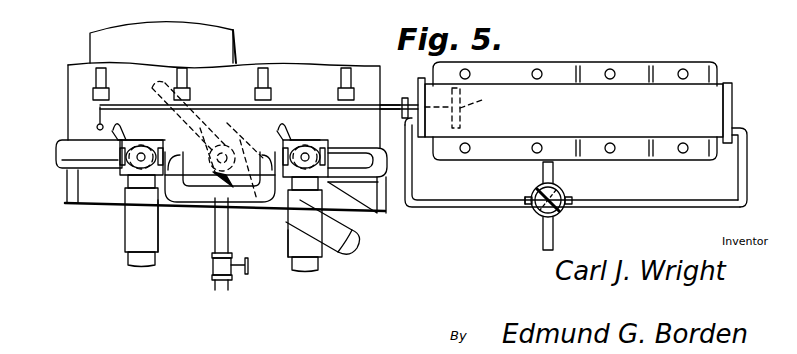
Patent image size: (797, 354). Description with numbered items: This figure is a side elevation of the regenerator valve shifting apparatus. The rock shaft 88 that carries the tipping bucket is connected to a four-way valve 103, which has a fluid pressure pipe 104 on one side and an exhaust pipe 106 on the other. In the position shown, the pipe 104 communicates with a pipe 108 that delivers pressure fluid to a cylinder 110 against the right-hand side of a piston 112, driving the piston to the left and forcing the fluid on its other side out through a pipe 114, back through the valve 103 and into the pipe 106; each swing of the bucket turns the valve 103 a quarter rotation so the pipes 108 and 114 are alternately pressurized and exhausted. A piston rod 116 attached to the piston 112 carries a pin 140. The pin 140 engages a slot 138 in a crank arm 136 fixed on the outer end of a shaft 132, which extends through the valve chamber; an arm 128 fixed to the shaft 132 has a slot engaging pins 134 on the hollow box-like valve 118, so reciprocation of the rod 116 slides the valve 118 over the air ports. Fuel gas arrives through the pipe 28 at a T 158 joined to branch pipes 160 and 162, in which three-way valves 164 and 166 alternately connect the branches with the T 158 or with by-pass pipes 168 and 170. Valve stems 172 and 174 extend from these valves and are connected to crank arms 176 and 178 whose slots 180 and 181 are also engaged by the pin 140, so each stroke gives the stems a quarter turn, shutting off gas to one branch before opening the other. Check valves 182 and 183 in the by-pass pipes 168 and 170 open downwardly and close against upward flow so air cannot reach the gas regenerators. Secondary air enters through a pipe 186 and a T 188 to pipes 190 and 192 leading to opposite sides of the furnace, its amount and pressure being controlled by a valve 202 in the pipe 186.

The gas pipe 28 is at (353, 240).
The rock shaft 88 is at (532, 212).
The four-way valve 103 is at (565, 190).
The fluid pressure pipe 104 is at (543, 168).
The exhaust pipe 106 is at (553, 230).
The pipe 108 is at (635, 200).
The cylinder 110 is at (637, 90).
The piston 112 is at (468, 108).
The pipe 114 is at (433, 200).
The piston rod 116 is at (390, 103).
The box-like valve 118 is at (228, 37).
The arm 128 is at (197, 108).
The shaft 132 is at (203, 170).
The pins 134 is at (157, 84).
The crank arm 136 is at (228, 147).
The slot 138 is at (220, 150).
The pin 140 is at (100, 123).
The T 158 is at (232, 170).
The branch pipe 160 is at (80, 207).
The branch pipe 162 is at (378, 180).
The three-way valve 164 is at (125, 177).
The three-way valve 166 is at (318, 182).
The by-pass pipe 168 is at (322, 262).
The by-pass pipe 170 is at (128, 260).
The valve stem 172 is at (142, 188).
The valve stem 174 is at (305, 217).
The crank arm 176 is at (123, 140).
The crank arm 178 is at (297, 133).
The slot 180 is at (118, 140).
The slot 181 is at (296, 165).
The check valve 182 is at (297, 245).
The check valve 183 is at (157, 242).
The pipe 186 is at (222, 290).
The T 188 is at (212, 265).
The pipe 190 is at (90, 152).
The pipe 192 is at (355, 160).
The valve 202 is at (215, 268).